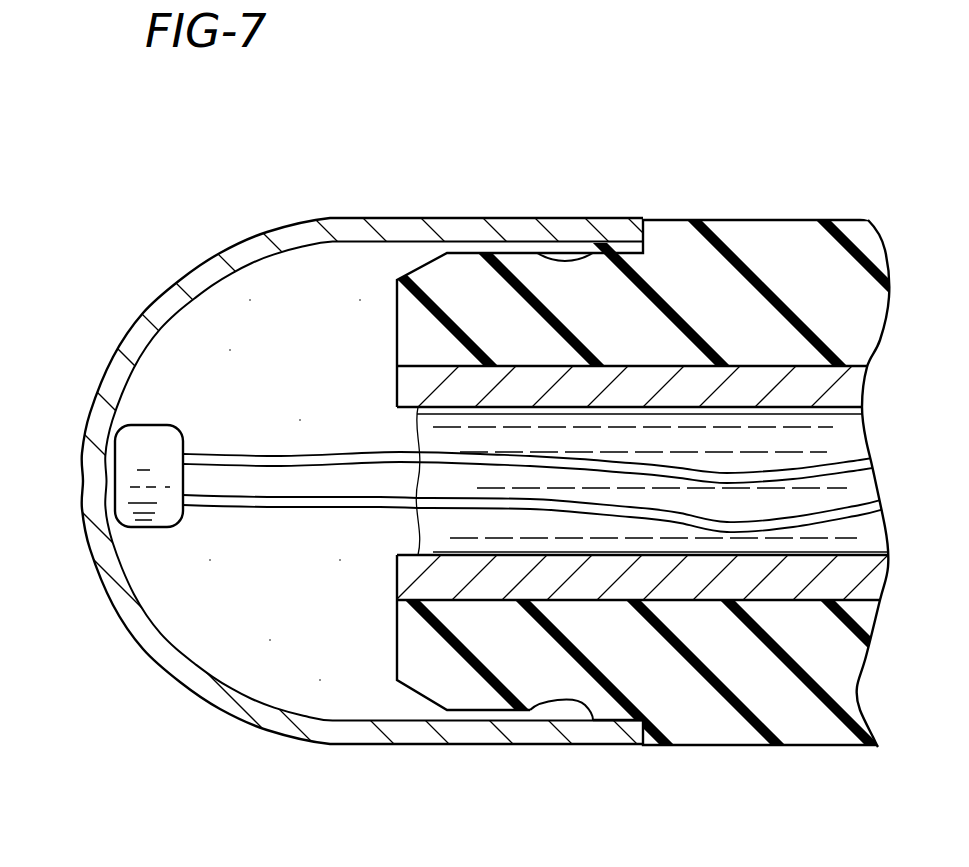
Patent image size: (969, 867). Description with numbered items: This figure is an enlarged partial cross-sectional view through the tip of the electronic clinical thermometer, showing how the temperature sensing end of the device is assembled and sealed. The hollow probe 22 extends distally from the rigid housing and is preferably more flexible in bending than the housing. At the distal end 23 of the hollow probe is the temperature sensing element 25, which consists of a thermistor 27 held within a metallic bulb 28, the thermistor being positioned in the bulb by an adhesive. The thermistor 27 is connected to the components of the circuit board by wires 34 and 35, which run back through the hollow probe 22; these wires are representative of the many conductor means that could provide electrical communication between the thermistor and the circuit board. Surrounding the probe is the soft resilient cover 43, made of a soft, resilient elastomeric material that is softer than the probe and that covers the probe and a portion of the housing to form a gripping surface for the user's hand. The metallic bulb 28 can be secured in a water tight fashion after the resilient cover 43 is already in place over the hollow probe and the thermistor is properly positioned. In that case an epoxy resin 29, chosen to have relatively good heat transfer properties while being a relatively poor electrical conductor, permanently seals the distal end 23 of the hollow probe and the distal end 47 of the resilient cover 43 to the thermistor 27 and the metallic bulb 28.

The hollow probe 22 is at (741, 376).
The distal end of the hollow probe 23 is at (436, 378).
The temperature sensing element 25 is at (246, 722).
The thermistor 27 is at (137, 515).
The metallic bulb 28 is at (312, 217).
The epoxy resin 29 is at (202, 651).
The wire 34 is at (617, 460).
The wire 35 is at (718, 530).
The soft resilient cover 43 is at (825, 220).
The distal end of the probe covering portion 47 is at (459, 686).